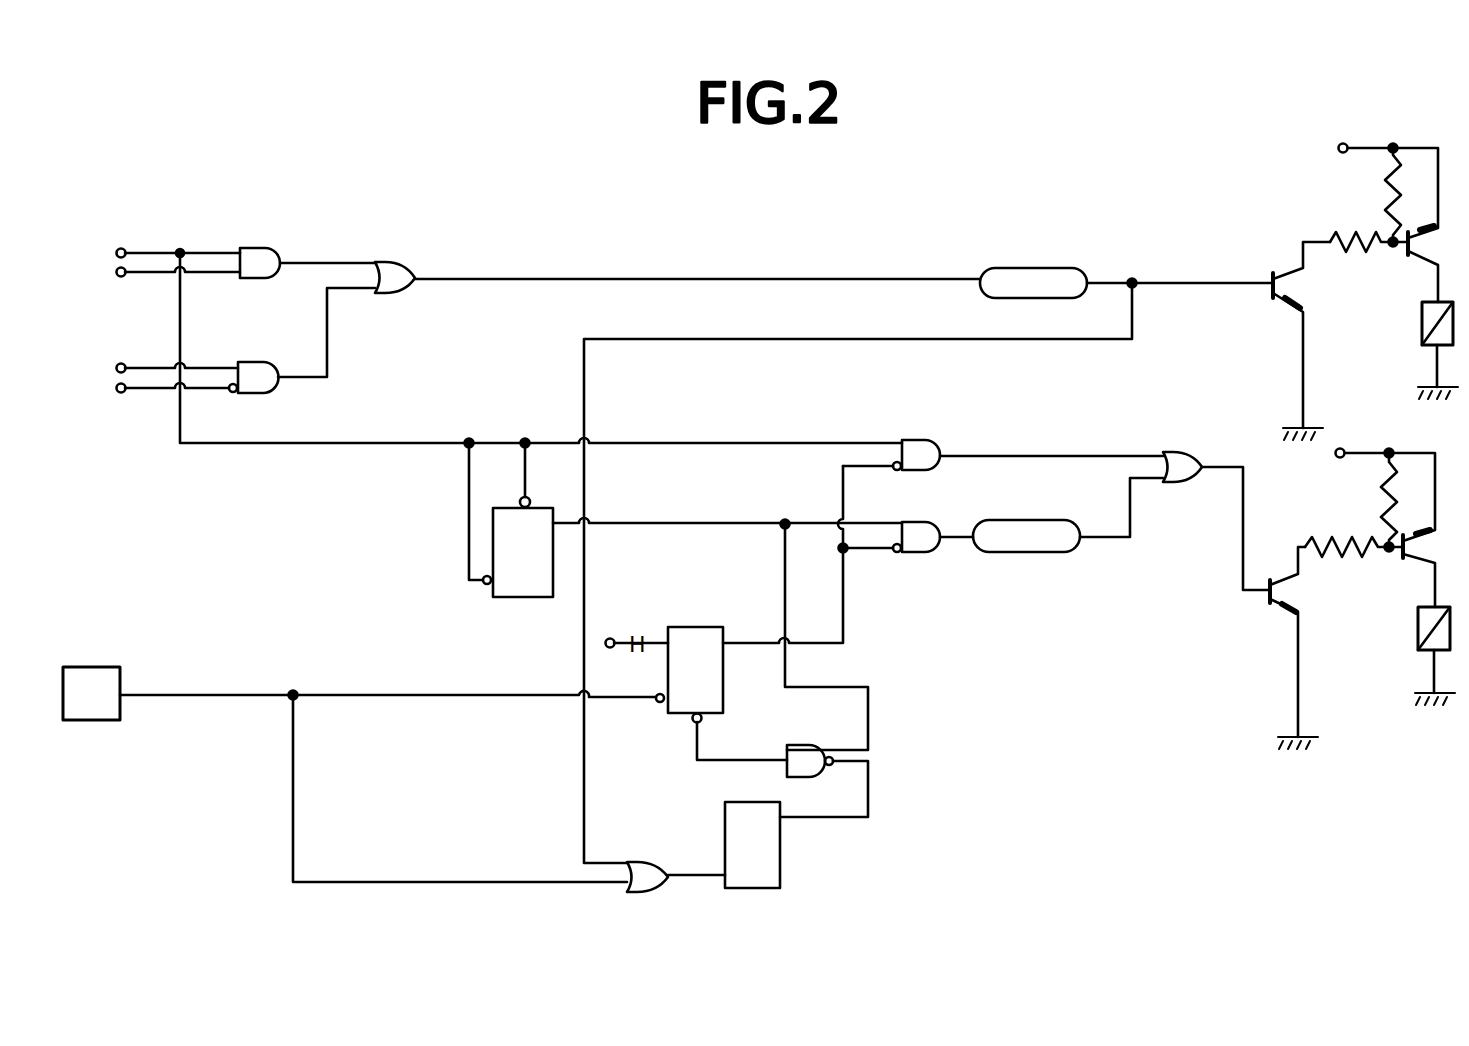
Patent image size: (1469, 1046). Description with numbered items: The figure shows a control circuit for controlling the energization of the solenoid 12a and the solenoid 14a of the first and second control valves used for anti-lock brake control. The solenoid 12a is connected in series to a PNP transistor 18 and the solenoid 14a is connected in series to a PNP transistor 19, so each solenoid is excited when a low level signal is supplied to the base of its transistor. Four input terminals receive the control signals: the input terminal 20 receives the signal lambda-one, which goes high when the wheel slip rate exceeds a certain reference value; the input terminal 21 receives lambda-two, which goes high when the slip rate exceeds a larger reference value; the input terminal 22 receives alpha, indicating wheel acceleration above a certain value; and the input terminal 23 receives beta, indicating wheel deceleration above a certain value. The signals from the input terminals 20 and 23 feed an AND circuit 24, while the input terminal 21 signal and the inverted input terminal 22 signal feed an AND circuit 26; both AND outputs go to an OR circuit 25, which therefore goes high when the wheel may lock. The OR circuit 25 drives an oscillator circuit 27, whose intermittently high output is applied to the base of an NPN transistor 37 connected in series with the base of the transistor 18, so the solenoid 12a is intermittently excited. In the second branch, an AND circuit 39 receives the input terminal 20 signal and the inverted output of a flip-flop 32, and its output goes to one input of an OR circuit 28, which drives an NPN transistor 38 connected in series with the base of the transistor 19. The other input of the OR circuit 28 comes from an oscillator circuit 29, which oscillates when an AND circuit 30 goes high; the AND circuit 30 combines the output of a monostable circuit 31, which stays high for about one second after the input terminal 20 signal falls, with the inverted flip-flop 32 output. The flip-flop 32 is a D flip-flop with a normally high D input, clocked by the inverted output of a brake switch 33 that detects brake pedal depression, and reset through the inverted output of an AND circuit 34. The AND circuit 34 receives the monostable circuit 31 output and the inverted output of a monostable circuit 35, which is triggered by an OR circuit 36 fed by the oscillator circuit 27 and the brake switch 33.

The input terminal 20 is at (117, 250).
The input terminal 23 is at (117, 277).
The input terminal 21 is at (117, 364).
The input terminal 22 is at (117, 393).
The AND circuit 24 is at (266, 251).
The OR circuit 25 is at (410, 272).
The AND circuit 26 is at (263, 392).
The oscillator circuit 27 is at (1012, 268).
The OR circuit 28 is at (1169, 453).
The oscillator circuit 29 is at (1047, 520).
The AND circuit 30 is at (930, 520).
The monostable circuit 31 is at (531, 592).
The flip-flop 32 is at (697, 627).
The brake switch 33 is at (88, 668).
The AND circuit 34 is at (787, 772).
The monostable circuit 35 is at (782, 878).
The OR circuit 36 is at (658, 871).
The NPN transistor 37 is at (1271, 281).
The NPN transistor 38 is at (1268, 601).
The AND circuit 39 is at (934, 443).
The PNP transistor 18 is at (1405, 252).
The PNP transistor 19 is at (1403, 558).
The solenoid 12a is at (1420, 326).
The solenoid 14a is at (1418, 636).